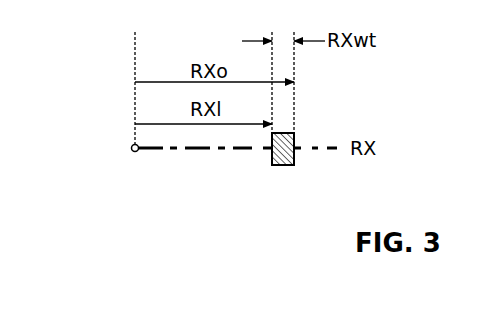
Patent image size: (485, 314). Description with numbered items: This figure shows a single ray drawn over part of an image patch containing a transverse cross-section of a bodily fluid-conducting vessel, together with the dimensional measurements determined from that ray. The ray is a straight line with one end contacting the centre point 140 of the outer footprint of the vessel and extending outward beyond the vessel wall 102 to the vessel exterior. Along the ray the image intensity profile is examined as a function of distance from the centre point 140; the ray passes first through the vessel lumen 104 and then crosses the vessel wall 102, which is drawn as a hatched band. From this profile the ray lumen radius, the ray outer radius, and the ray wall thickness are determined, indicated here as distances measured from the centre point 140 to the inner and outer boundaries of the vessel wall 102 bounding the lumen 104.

The vessel wall 102 is at (298, 194).
The vessel lumen 104 is at (225, 177).
The centre point 140 is at (112, 171).